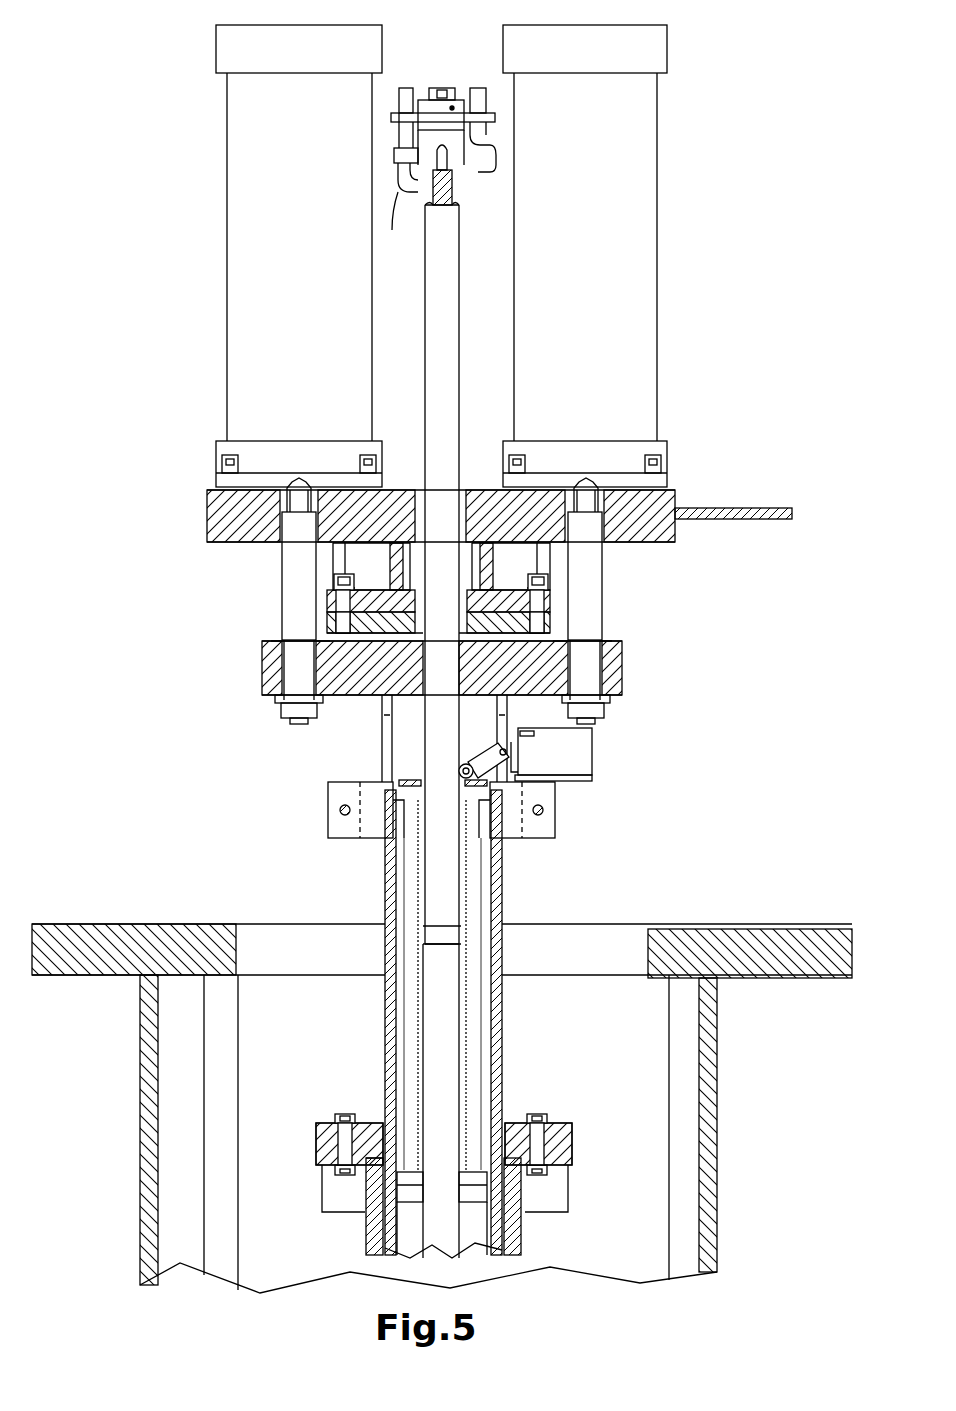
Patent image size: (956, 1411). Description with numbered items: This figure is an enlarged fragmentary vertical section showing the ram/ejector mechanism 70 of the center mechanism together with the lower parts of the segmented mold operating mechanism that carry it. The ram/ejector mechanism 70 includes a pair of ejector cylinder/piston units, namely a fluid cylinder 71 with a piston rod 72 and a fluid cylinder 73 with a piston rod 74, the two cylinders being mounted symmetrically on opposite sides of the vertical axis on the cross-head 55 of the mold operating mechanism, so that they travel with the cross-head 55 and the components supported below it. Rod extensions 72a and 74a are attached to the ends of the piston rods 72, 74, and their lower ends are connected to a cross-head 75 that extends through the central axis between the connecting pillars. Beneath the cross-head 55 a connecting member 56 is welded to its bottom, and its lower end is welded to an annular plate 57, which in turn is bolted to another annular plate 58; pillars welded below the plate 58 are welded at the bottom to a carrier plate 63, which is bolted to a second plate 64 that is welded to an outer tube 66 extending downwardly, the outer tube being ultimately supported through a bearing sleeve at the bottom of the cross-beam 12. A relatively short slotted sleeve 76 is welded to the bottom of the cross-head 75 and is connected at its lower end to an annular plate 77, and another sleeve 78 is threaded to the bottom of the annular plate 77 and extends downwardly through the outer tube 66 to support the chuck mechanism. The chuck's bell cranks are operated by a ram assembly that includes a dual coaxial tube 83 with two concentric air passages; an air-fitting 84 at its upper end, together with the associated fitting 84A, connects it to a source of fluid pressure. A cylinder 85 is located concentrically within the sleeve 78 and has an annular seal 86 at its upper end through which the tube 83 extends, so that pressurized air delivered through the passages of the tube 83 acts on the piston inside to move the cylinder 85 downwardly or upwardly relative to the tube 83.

The ram/ejector mechanism 70 is at (684, 100).
The fluid cylinder 71 is at (270, 290).
The fluid cylinder 73 is at (635, 230).
The rotary fitting 84A is at (478, 152).
The air-fitting 84 is at (404, 210).
The tube 83 is at (460, 330).
The cross-head 55 is at (205, 538).
The piston rod 72 is at (298, 500).
The rod extension 72a is at (290, 565).
The piston rod 74 is at (618, 512).
The rod extension 74a is at (592, 542).
The connecting member 56 is at (590, 548).
The annular plate 57 is at (545, 598).
The annular plate 58 is at (548, 625).
The cross-head 75 is at (262, 668).
The slotted sleeve 76 is at (378, 748).
The annular plate 77 is at (330, 810).
The sleeve 78 is at (500, 880).
The cross-beam 12 is at (718, 1188).
The carrier plate 63 is at (565, 1123).
The second plate 64 is at (580, 1152).
The annular seal 86 is at (380, 1210).
The outer tube 66 is at (560, 1240).
The cylinder 85 is at (472, 1238).